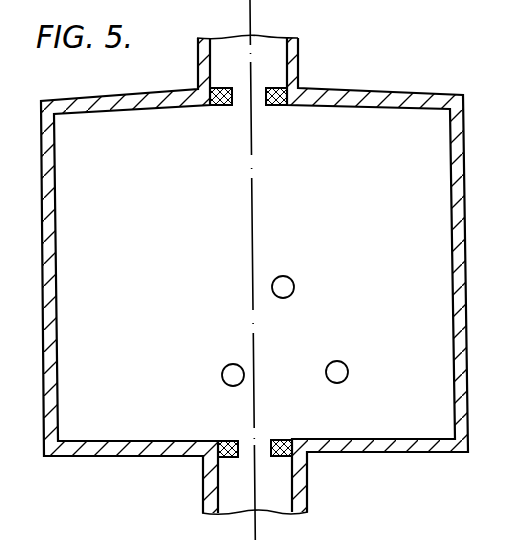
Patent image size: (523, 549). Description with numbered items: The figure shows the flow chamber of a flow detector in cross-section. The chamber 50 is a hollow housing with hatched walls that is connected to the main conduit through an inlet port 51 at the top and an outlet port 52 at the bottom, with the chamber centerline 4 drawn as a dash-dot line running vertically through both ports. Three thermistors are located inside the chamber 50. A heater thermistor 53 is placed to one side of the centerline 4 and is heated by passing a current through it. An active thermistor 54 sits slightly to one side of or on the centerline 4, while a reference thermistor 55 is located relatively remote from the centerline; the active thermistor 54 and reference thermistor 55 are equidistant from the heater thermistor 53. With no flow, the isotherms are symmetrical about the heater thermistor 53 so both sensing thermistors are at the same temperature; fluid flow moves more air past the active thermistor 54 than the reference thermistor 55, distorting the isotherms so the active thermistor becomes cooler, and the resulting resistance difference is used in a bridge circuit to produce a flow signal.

The central axis (center line) 4 is at (246, 270).
The chamber 50 is at (161, 234).
The inlet port 51 is at (219, 106).
The outlet port 52 is at (277, 438).
The heater thermistor 53 is at (290, 279).
The active thermistor 54 is at (224, 369).
The reference thermistor 55 is at (345, 365).